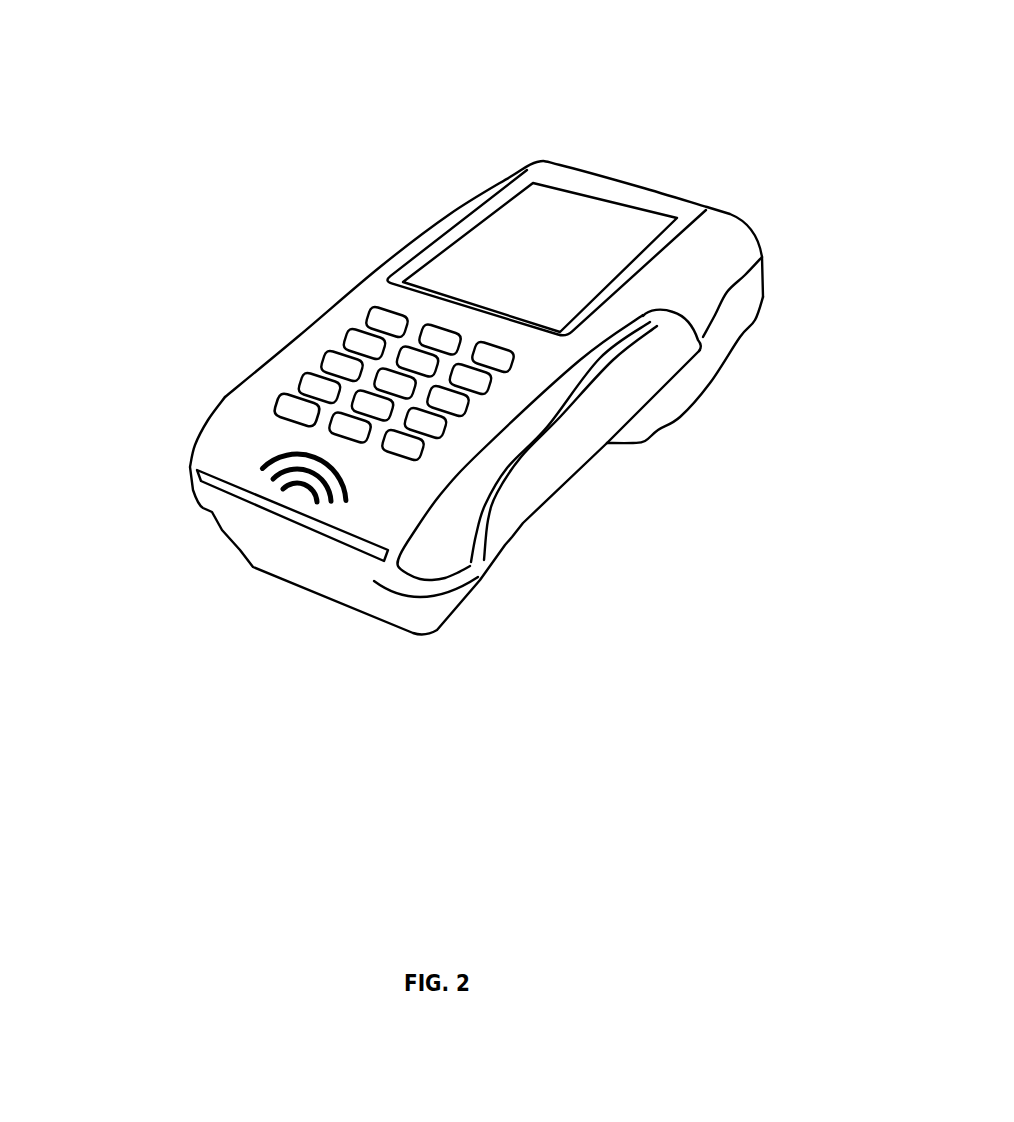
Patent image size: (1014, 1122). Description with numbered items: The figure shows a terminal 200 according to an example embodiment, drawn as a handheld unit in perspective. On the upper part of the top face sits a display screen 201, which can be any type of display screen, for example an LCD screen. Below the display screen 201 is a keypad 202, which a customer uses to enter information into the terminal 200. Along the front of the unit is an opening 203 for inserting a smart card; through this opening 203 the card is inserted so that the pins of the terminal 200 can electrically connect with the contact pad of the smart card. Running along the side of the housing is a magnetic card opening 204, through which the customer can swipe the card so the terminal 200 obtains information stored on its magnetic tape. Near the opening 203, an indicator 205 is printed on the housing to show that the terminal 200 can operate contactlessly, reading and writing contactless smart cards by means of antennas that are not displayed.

The terminal 200 is at (632, 144).
The display screen 201 is at (543, 233).
The keypad 202 is at (350, 327).
The opening 203 is at (260, 533).
The magnetic card opening 204 is at (471, 548).
The indicator 205 is at (240, 427).